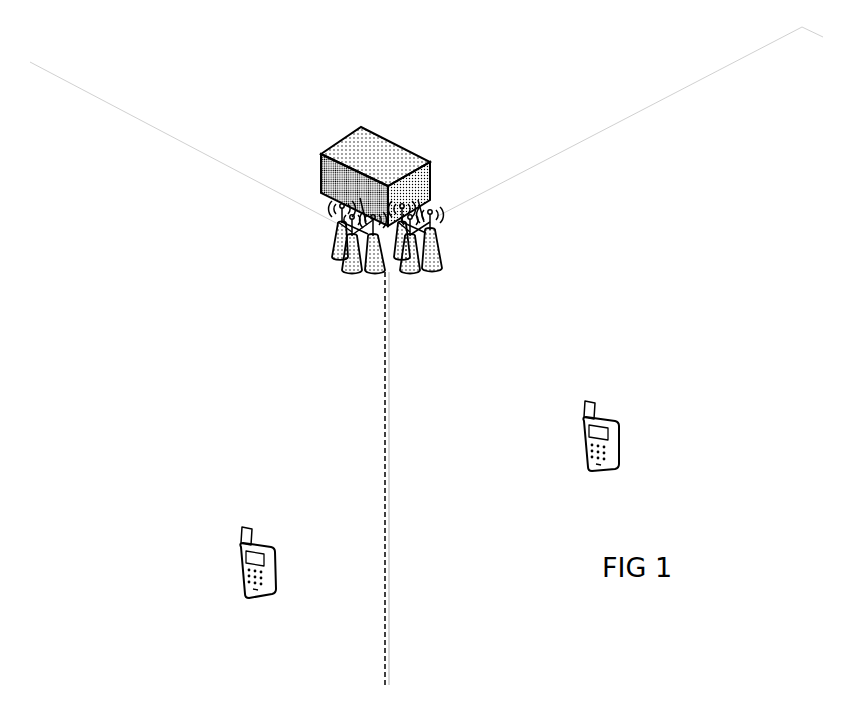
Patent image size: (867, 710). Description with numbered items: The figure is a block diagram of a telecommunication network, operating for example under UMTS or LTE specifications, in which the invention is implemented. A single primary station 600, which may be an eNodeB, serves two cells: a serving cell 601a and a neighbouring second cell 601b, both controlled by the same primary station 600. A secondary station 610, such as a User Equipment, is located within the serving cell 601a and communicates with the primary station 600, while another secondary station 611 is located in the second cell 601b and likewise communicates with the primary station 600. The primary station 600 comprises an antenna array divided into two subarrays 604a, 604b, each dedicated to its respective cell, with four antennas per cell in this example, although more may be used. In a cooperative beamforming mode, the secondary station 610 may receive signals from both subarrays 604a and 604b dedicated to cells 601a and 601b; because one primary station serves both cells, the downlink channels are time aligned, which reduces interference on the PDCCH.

The primary station 600 is at (430, 160).
The serving cell 601a is at (117, 255).
The second cell 601b is at (653, 250).
The antenna subarray 604a is at (355, 272).
The antenna subarray 604b is at (443, 253).
The secondary station 610 is at (237, 585).
The secondary station 611 is at (572, 460).